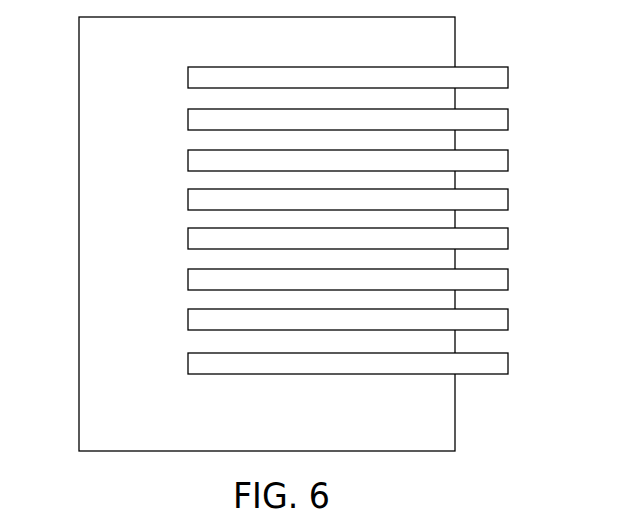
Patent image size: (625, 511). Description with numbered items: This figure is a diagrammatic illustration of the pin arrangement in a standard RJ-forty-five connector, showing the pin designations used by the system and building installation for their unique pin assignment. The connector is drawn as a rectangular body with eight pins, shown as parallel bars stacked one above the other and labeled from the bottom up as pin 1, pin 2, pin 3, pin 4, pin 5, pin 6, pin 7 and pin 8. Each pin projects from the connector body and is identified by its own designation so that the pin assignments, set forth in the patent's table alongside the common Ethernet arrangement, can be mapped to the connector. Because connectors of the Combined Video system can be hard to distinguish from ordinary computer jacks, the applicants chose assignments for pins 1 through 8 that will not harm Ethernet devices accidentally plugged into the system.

The pin 1 is at (188, 364).
The pin 2 is at (188, 320).
The pin 3 is at (188, 280).
The pin 4 is at (188, 239).
The pin 5 is at (188, 200).
The pin 6 is at (188, 161).
The pin 7 is at (188, 121).
The pin 8 is at (188, 78).